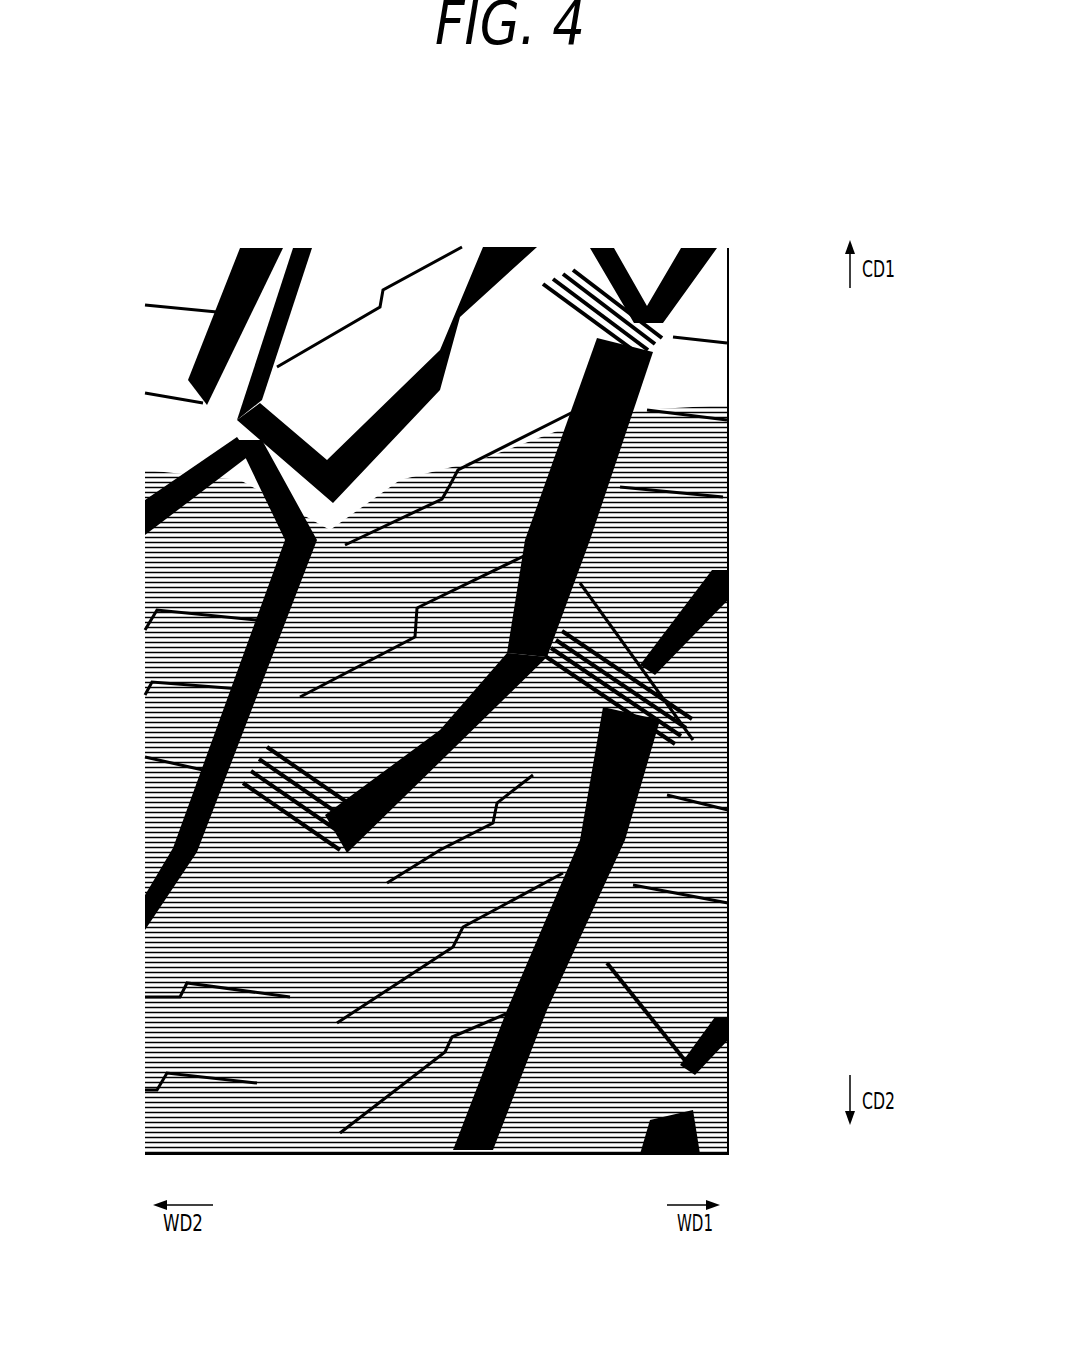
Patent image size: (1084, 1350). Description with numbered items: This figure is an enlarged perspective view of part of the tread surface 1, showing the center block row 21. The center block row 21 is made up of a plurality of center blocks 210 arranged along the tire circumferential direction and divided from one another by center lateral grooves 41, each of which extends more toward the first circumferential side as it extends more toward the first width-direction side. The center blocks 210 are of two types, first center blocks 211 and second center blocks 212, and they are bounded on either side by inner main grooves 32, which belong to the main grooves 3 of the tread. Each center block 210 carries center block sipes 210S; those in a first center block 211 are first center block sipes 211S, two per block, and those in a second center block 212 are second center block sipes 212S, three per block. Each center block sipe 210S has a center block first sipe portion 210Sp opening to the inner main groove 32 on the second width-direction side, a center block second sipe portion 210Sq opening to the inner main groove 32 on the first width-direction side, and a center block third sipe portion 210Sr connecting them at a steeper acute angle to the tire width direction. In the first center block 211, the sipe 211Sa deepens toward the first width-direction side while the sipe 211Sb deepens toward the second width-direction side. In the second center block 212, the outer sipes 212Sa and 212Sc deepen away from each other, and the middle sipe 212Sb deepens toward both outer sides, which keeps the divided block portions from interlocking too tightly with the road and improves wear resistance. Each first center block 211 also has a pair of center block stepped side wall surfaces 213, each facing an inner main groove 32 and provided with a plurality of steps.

The tread surface 1 is at (766, 226).
The center block row 21 is at (420, 212).
The inner main groove 32 is at (431, 515).
The groove 3 is at (522, 224).
The center block stepped side wall surface 213 is at (613, 328).
The center block 210 is at (658, 746).
The first center block 211 is at (512, 512).
The second center block 212 is at (512, 953).
The center lateral groove 41 is at (437, 745).
The center block sipe 210S is at (499, 778).
The first center block sipe 211S is at (644, 560).
The first center block sipe 211Sa is at (517, 443).
The first center block sipe 211Sb is at (597, 622).
The second center block sipe 212S is at (637, 990).
The second center block sipe 212Sa is at (532, 774).
The second center block sipe 212Sb is at (520, 897).
The second center block sipe 212Sc is at (473, 1033).
The center block second sipe portion 210Sq is at (441, 597).
The center block first sipe portion 210Sp is at (413, 637).
The center block third sipe portion 210Sr is at (401, 668).